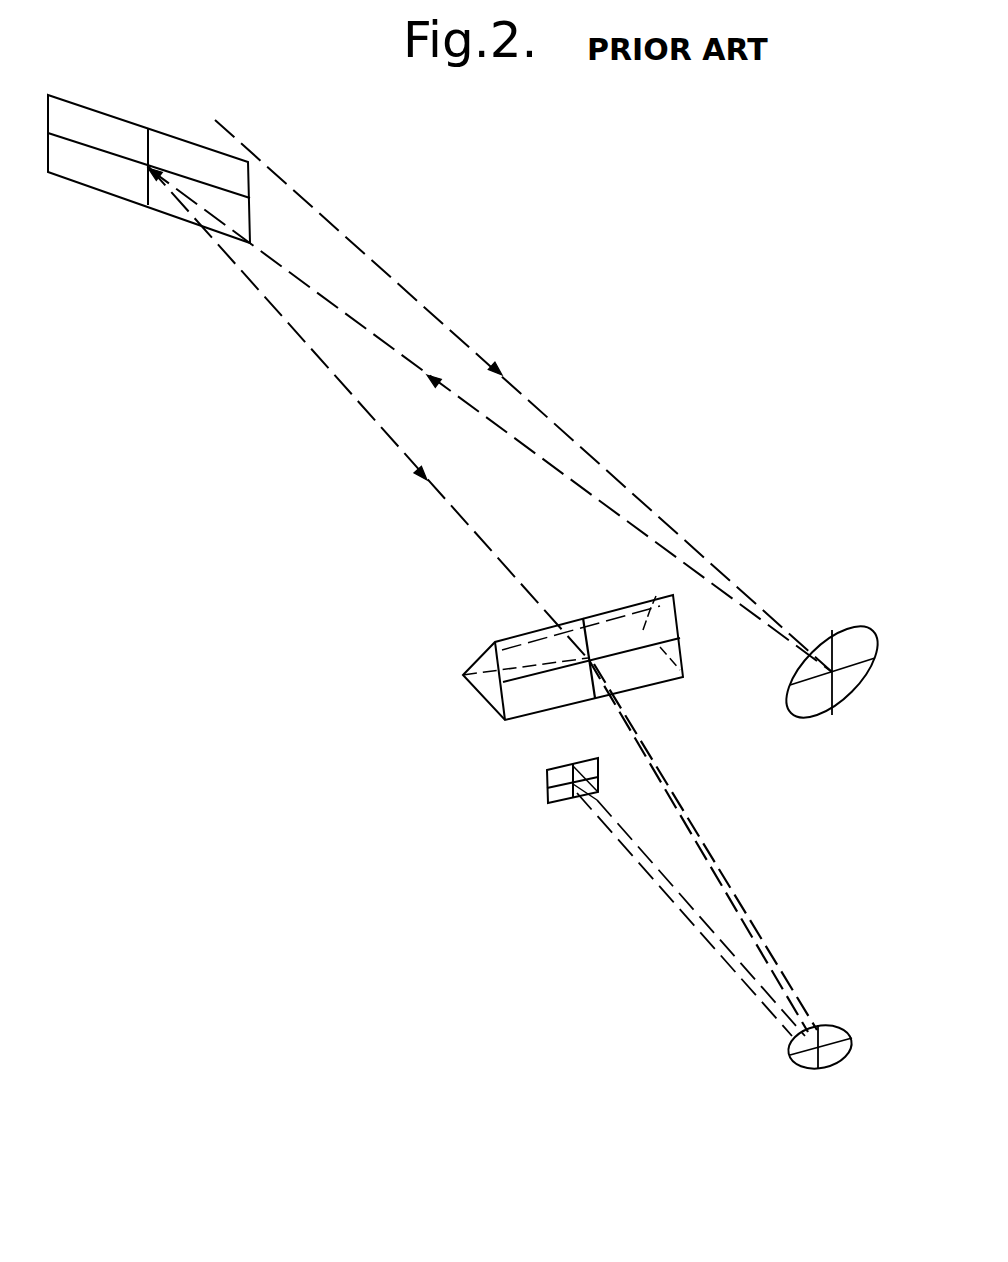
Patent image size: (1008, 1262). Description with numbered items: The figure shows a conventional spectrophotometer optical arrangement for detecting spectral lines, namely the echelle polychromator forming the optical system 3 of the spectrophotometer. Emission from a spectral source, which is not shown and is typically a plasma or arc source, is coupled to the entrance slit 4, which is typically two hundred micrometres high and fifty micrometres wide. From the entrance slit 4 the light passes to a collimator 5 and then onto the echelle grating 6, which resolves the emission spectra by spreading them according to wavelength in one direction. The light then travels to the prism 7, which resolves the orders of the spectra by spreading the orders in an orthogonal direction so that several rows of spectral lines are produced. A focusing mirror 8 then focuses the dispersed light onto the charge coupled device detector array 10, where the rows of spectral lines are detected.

The optical system 3 is at (685, 430).
The entrance slit 4 is at (350, 230).
The collimator 5 is at (838, 628).
The echelle grating 6 is at (155, 213).
The prism 7 is at (508, 722).
The focusing mirror 8 is at (800, 1068).
The charge coupled device detector array 10 is at (555, 803).